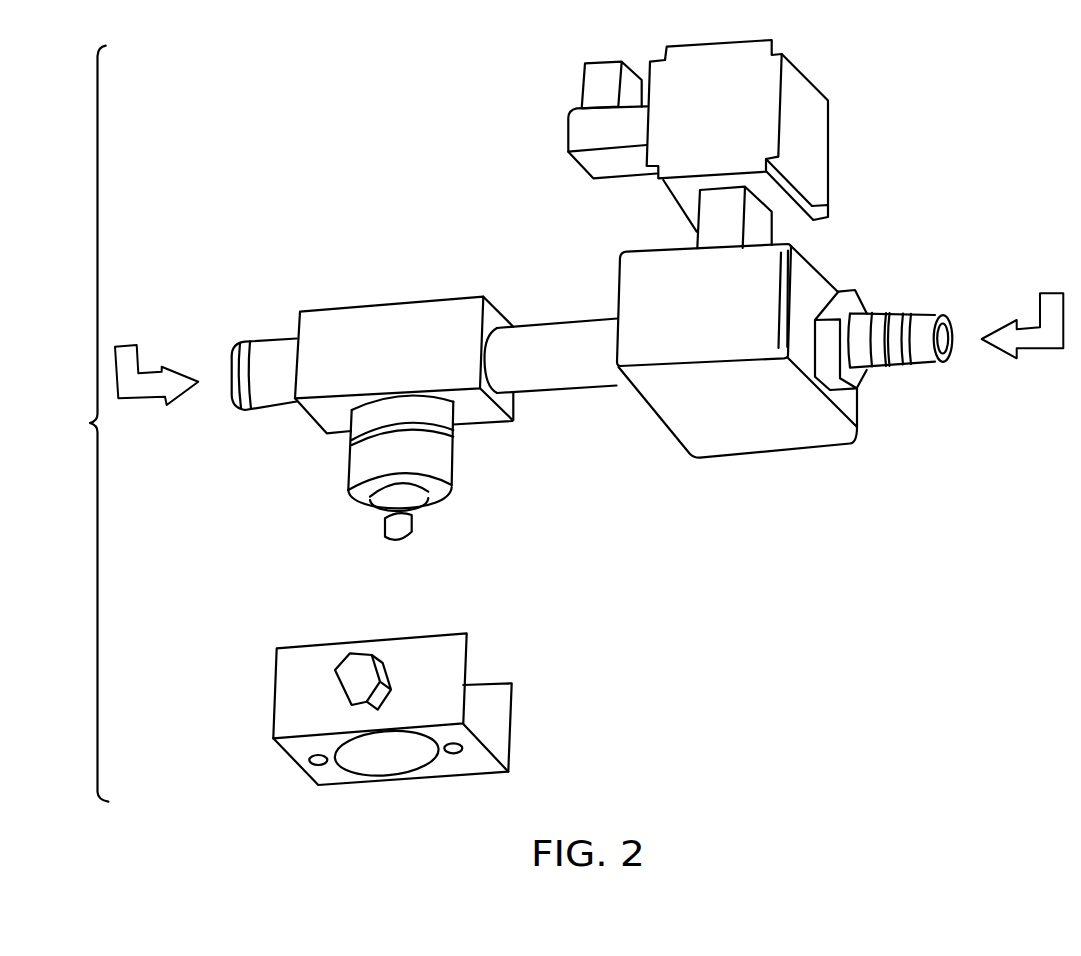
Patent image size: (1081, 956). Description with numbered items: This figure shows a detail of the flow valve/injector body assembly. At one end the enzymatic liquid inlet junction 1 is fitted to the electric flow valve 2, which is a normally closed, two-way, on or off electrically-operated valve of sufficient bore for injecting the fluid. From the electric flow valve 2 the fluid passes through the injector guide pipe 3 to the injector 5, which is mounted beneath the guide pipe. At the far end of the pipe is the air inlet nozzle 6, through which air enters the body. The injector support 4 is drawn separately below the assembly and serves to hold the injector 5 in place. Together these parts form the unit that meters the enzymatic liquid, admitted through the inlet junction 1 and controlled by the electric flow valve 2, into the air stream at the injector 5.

The enzymatic liquid inlet junction 1 is at (878, 368).
The electric flow valve 2 is at (742, 420).
The injector guide pipe 3 is at (542, 335).
The injector support 4 is at (288, 697).
The injector 5 is at (455, 465).
The air inlet nozzle 6 is at (237, 395).